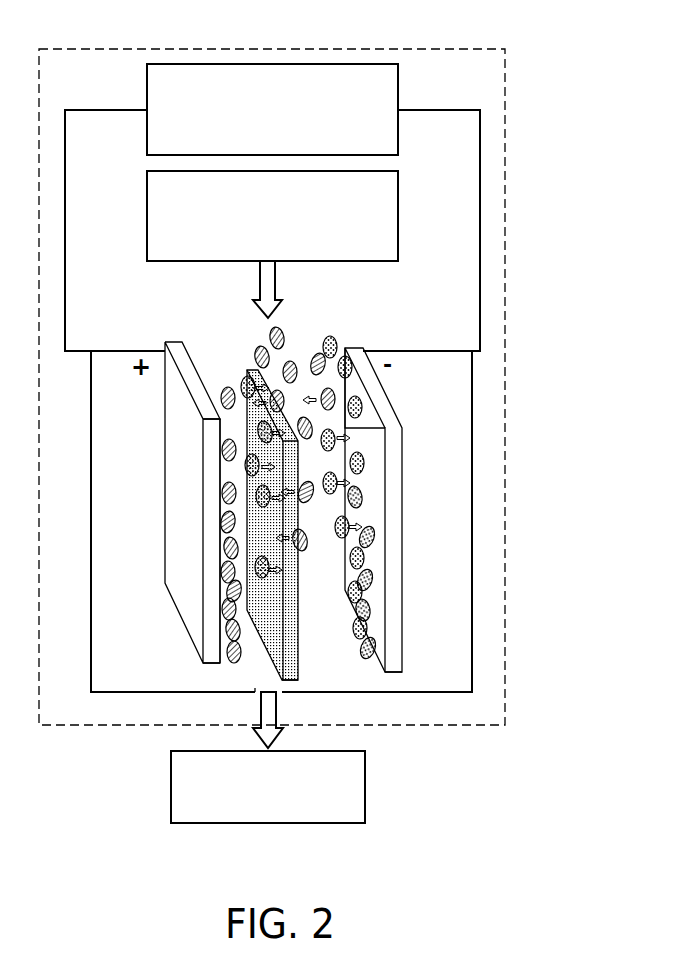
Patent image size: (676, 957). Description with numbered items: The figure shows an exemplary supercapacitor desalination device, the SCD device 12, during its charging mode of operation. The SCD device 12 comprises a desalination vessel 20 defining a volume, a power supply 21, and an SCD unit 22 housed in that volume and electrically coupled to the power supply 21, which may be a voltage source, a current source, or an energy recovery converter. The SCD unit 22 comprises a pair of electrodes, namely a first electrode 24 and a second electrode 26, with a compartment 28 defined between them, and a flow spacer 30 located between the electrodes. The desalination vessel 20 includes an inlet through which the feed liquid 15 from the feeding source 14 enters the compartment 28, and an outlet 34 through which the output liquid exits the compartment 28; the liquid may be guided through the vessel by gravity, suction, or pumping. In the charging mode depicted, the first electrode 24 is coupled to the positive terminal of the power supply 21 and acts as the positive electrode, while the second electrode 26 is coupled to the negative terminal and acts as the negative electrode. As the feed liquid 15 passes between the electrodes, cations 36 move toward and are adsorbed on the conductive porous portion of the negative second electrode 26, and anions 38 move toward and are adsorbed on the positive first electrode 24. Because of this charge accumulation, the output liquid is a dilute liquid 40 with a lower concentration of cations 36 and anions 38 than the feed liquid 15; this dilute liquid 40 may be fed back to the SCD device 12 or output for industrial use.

The SCD device 12 is at (505, 320).
The power supply 21 is at (270, 64).
The feeding source 14 is at (400, 196).
The feed liquid 15 is at (260, 279).
The desalination vessel 20 is at (132, 692).
The first electrode 24 is at (168, 556).
The compartment 28 is at (207, 363).
The flow spacer 30 is at (257, 363).
The second electrode 26 is at (402, 580).
The anions 38 is at (226, 386).
The cations 36 is at (329, 334).
The outlet 34 is at (255, 692).
The SCD unit 22 is at (213, 657).
The dilute liquid 40 is at (366, 783).